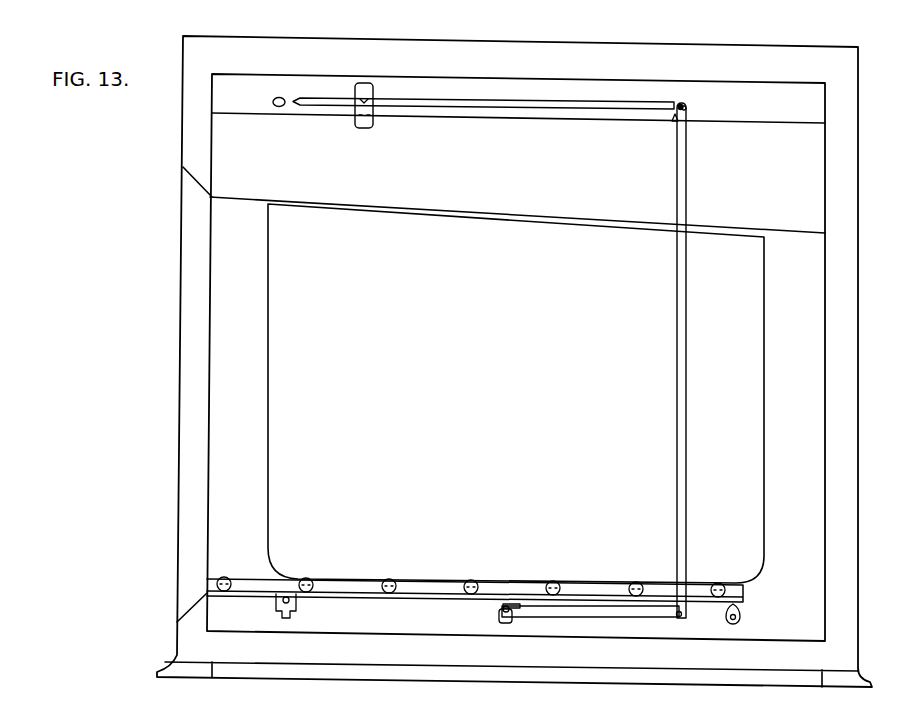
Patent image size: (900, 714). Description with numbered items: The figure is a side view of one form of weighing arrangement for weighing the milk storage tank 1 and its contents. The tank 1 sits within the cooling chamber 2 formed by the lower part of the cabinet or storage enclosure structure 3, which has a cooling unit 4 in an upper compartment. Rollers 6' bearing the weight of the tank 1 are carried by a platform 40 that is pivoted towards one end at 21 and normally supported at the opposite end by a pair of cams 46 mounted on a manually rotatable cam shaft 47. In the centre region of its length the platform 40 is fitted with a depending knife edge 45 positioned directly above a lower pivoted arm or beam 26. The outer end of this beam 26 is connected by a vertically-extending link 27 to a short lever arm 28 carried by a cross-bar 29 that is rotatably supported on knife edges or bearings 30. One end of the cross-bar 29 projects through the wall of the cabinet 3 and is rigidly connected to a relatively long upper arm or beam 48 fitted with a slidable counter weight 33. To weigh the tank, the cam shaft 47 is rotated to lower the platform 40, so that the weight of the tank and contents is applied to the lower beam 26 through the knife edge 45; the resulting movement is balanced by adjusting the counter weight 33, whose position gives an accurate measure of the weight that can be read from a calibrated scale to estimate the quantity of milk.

The milk storage tank 1 is at (296, 396).
The cooling chamber 2 is at (222, 457).
The cabinet or storage enclosure structure 3 is at (196, 129).
The cooling unit 4 is at (807, 163).
The rollers 6' is at (471, 621).
The pivot 21 is at (292, 601).
The lower pivoted arm or beam 26 is at (589, 612).
The vertically-extending link 27 is at (684, 484).
The short lever arm 28 is at (685, 106).
The cross-bar 29 is at (679, 105).
The knife edges or bearings 30 is at (675, 123).
The slidable counter weight 33 is at (372, 122).
The platform 40 is at (365, 598).
The depending knife edge 45 is at (511, 600).
The cams 46 is at (741, 616).
The manually rotatable cam shaft 47 is at (729, 612).
The upper arm or beam 48 is at (515, 106).